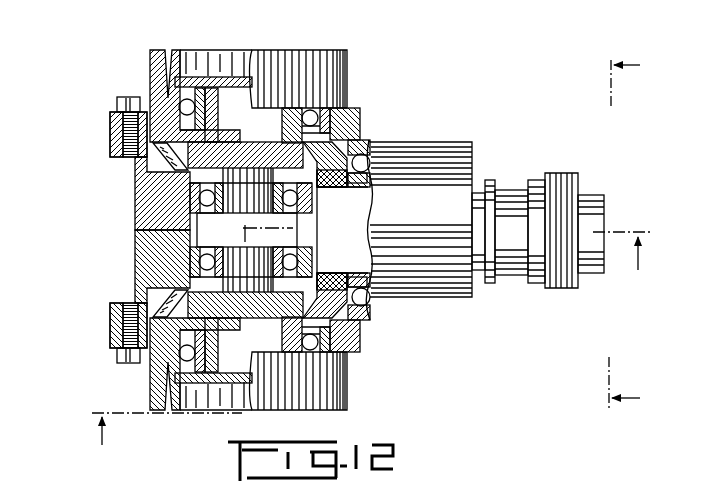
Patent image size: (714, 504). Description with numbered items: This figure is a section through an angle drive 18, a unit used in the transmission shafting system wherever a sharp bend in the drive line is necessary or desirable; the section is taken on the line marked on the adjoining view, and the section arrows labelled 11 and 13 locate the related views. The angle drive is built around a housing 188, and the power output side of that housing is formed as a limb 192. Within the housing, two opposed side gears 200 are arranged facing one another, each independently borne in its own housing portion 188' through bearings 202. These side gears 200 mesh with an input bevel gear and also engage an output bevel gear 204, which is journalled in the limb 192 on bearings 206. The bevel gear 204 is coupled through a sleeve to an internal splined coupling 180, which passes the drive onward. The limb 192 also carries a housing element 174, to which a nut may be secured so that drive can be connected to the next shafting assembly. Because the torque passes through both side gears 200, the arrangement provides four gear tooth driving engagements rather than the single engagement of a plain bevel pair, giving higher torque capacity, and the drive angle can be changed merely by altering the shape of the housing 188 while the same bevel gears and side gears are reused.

The angle drive 18 is at (356, 356).
The housing 188 is at (136, 230).
The housing portions 188' is at (157, 230).
The side gears 200 is at (170, 158).
The bearings 202 is at (348, 118).
The bevel gear 204 is at (382, 146).
The bearings 206 is at (352, 193).
The limb 192 is at (410, 305).
The housing element 174 is at (512, 278).
The internal splined coupling 180 is at (586, 273).
The section line 13- 13 is at (628, 234).
The section line 11- 11 is at (374, 343).